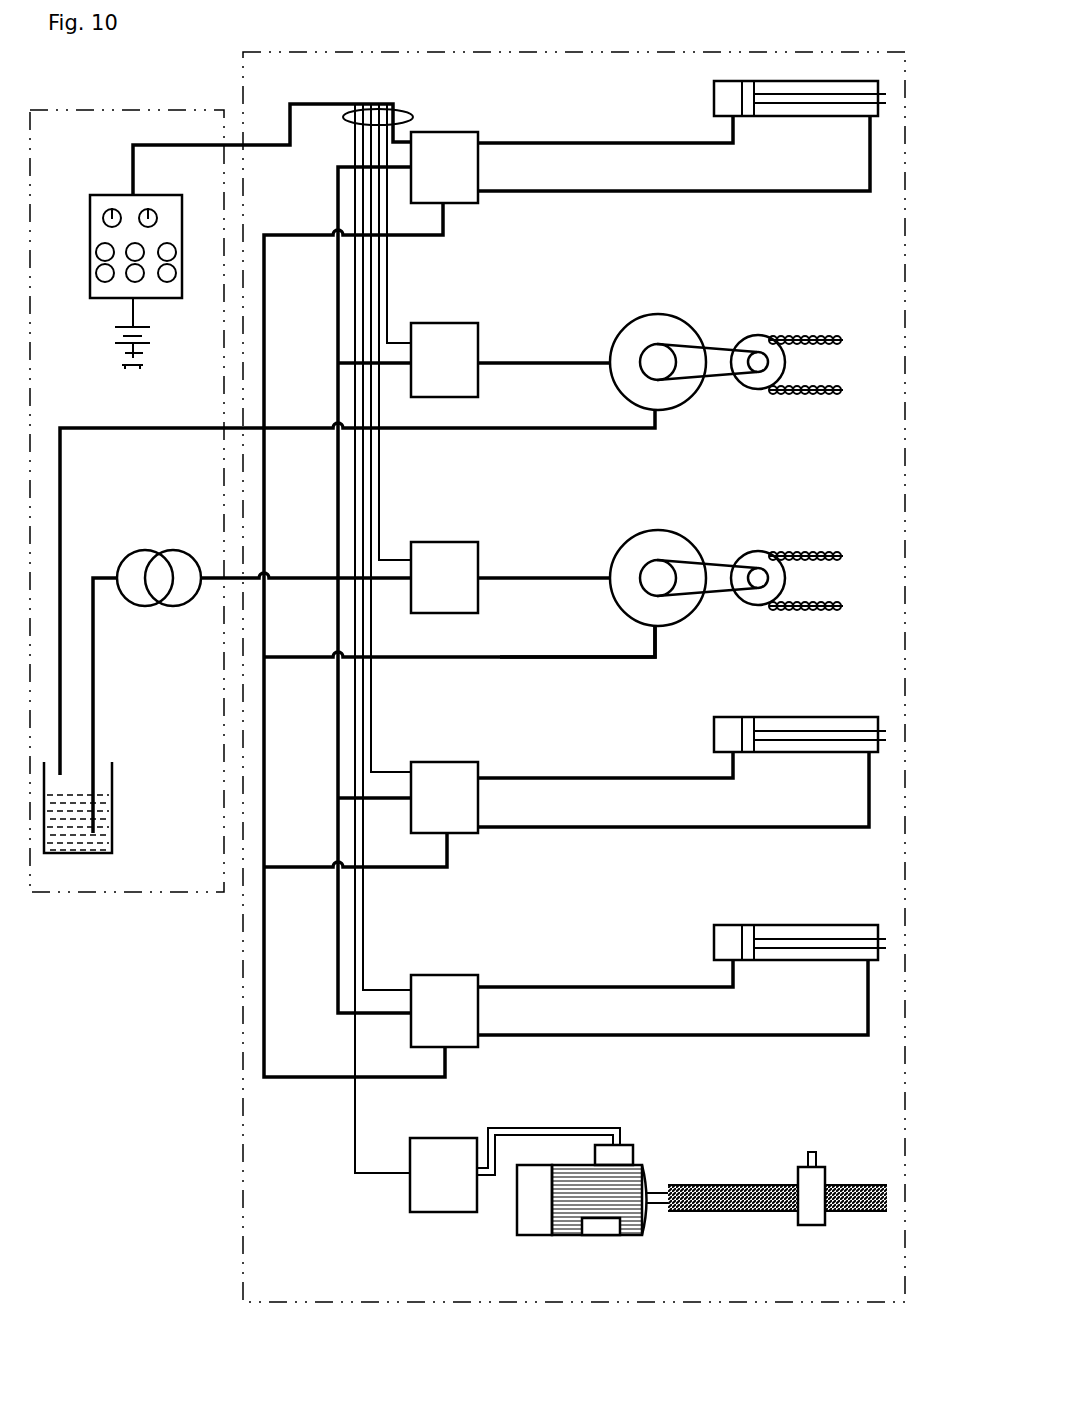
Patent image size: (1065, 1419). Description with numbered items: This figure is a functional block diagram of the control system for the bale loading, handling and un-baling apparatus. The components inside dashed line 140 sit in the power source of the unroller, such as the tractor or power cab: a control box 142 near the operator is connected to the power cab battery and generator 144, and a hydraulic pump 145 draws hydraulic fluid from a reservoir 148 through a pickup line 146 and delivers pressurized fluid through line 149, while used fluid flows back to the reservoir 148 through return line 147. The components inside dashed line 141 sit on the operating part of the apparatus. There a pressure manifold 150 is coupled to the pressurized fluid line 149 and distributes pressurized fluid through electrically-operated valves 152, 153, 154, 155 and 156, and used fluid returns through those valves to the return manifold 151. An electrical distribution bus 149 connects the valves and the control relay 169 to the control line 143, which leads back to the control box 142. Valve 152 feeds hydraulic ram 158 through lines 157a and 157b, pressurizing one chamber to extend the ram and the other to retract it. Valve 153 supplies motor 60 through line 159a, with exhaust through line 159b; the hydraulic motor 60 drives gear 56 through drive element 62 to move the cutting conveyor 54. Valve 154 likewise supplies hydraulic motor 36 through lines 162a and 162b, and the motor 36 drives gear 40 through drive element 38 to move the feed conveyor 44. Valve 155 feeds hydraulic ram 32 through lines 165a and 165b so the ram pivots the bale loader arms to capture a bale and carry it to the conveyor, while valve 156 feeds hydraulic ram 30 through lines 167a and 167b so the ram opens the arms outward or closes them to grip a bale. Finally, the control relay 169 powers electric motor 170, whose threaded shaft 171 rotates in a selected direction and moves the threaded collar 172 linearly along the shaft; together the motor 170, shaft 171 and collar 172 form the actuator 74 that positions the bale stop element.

The dashed line 140 is at (63, 108).
The dashed line 141 is at (590, 52).
The control box 142 is at (108, 194).
The control line 143 is at (215, 142).
The battery and generator 144 is at (117, 343).
The hydraulic pump 145 is at (145, 548).
The pickup line 146 is at (97, 718).
The return line 147 is at (167, 430).
The reservoir 148 is at (105, 823).
The pressurized fluid line and electrical distribution bus 149 is at (410, 113).
The pressure manifold 150 is at (337, 330).
The return manifold 151 is at (265, 395).
The electrically-operated valve 152 is at (444, 167).
The electrically-operated valve 153 is at (444, 360).
The electrically-operated valve 154 is at (444, 577).
The electrically-operated valve 155 is at (444, 797).
The electrically-operated valve 156 is at (444, 1011).
The line 157a is at (613, 140).
The line 157b is at (618, 193).
The hydraulic ram 158 is at (815, 80).
The line 159a is at (523, 362).
The line 159b is at (522, 425).
The hydraulic motor 60 is at (625, 347).
The drive element 62 is at (687, 343).
The gear 56 is at (750, 345).
The cutting conveyor 54 is at (793, 338).
The line 162a is at (525, 576).
The line 162b is at (508, 655).
The hydraulic motor 36 is at (630, 552).
The drive element 38 is at (717, 563).
The gear 40 is at (758, 552).
The feed conveyor 44 is at (818, 553).
The line 165a is at (593, 777).
The line 165b is at (595, 830).
The hydraulic ram 32 is at (802, 715).
The line 167a is at (612, 985).
The line 167b is at (620, 1033).
The hydraulic ram 30 is at (772, 925).
The control relay 169 is at (515, 1170).
The electric motor 170 is at (573, 1233).
The threaded shaft 171 is at (733, 1218).
The threaded collar 172 is at (812, 1220).
The actuator 74 is at (777, 1198).